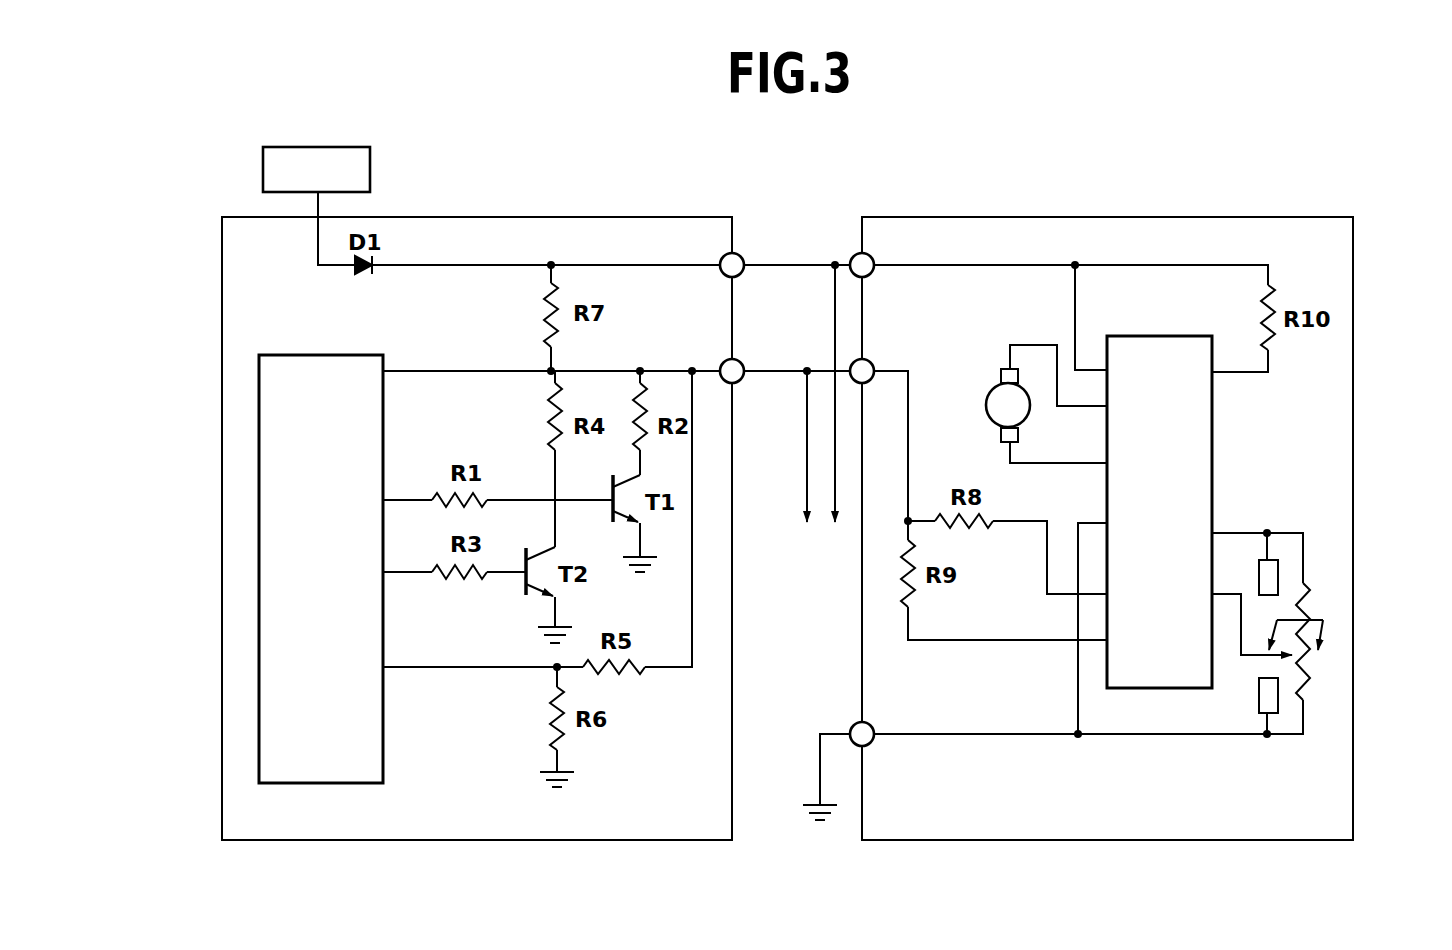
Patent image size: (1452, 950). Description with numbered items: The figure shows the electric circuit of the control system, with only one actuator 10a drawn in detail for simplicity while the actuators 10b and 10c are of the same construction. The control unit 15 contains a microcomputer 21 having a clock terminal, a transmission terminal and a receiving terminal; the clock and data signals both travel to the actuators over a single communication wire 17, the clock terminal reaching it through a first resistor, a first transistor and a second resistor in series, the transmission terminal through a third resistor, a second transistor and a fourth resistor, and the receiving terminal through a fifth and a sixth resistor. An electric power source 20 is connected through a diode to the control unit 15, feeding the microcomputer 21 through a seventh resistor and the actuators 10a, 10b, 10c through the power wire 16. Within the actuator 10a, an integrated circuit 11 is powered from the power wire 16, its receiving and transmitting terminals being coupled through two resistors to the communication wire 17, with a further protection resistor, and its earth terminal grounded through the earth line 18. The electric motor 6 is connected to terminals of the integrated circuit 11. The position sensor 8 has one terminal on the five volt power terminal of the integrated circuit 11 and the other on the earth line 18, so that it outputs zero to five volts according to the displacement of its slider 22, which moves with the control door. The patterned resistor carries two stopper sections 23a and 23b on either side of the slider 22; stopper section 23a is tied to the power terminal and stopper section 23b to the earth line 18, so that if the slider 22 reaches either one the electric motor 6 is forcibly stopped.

The electric power source 20 is at (318, 147).
The control unit 15 is at (585, 217).
The microcomputer (CPU) 21 is at (383, 745).
The power wire 16 is at (793, 268).
The communication wire 17 is at (778, 373).
The earth line 18 is at (820, 763).
The actuator 10a is at (1107, 492).
The actuator 10b is at (1107, 528).
The actuator 10c is at (1160, 217).
The electric motor 6 is at (985, 406).
The integrated circuit 11 is at (1212, 427).
The position sensor 8 is at (1310, 675).
The slider 22 is at (1315, 613).
The stopper section 23a is at (1258, 578).
The stopper section 23b is at (1257, 697).